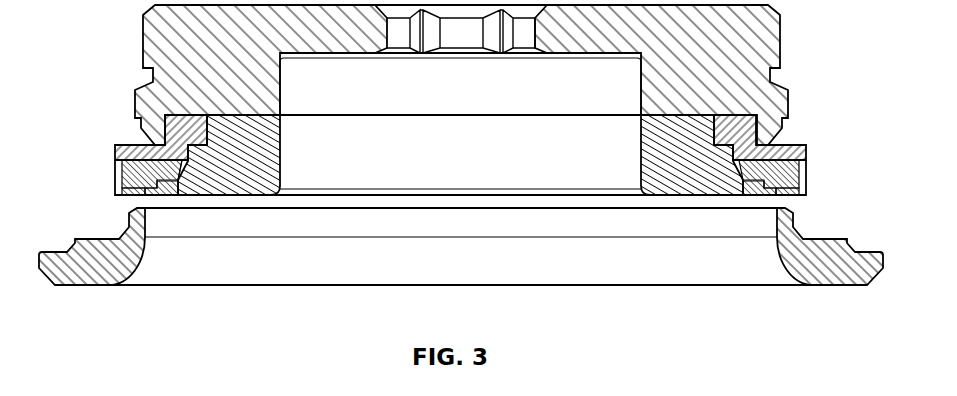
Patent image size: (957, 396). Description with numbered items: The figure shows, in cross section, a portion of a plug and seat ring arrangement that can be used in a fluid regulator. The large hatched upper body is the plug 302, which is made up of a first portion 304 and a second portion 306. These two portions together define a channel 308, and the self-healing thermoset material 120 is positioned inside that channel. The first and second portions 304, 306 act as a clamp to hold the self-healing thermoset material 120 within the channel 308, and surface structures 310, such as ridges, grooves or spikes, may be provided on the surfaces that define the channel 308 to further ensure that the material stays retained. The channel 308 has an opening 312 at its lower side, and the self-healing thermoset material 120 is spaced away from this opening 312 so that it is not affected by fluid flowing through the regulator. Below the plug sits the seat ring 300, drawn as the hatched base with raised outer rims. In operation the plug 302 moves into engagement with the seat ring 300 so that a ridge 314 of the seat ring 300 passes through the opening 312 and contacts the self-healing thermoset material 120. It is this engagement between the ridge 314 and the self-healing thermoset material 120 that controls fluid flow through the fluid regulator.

The plug 302 is at (148, 48).
The first portion 304 is at (257, 186).
The second portion 306 is at (133, 143).
The self-healing thermoset material 120 is at (123, 168).
The surface structures 310 is at (162, 183).
The opening 312 is at (137, 197).
The channel 308 is at (184, 181).
The ridge 314 is at (136, 193).
The seat ring 300 is at (77, 283).